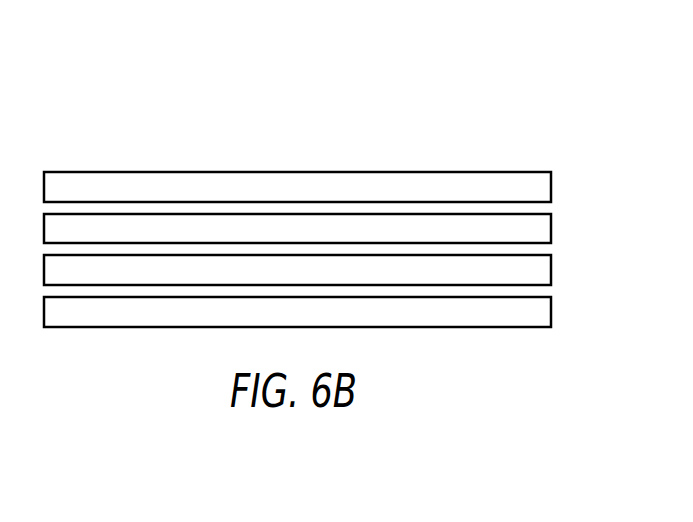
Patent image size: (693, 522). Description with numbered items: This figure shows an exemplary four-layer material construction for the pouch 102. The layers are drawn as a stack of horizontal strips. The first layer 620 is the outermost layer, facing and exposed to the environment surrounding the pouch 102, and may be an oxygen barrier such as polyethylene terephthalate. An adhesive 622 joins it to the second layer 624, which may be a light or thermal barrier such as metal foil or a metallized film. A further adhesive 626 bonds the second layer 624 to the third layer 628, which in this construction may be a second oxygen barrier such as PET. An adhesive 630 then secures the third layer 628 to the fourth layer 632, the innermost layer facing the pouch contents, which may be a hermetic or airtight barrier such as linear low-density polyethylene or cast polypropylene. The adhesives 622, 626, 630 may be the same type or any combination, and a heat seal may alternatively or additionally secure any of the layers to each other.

The pouch 102 is at (500, 82).
The first layer 620 is at (552, 183).
The adhesive 622 is at (535, 208).
The second layer 624 is at (552, 230).
The adhesive 626 is at (535, 248).
The third layer 628 is at (552, 268).
The adhesive 630 is at (543, 290).
The fourth layer 632 is at (552, 313).